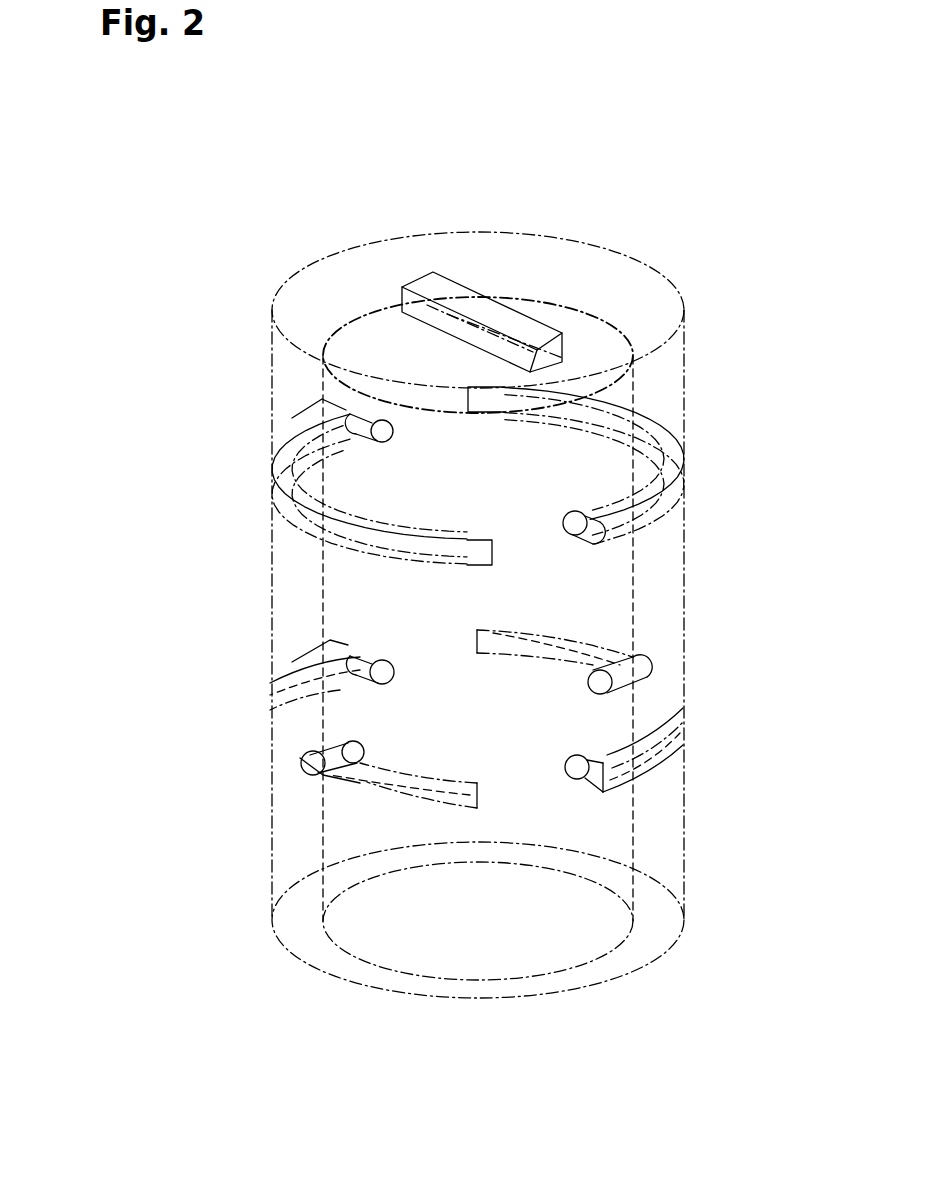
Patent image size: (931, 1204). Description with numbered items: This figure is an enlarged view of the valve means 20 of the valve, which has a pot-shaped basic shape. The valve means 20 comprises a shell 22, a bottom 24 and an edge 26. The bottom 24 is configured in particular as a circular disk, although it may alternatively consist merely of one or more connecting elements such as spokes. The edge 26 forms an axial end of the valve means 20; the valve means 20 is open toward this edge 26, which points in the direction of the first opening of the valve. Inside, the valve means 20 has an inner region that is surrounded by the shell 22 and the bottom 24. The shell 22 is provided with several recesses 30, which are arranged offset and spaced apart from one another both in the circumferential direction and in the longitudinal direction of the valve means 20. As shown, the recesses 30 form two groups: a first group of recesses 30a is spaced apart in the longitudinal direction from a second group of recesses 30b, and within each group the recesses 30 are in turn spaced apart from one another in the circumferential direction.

The valve means 20 is at (598, 249).
The shell 22 is at (457, 937).
The bottom 24 is at (341, 288).
The edge 26 is at (533, 983).
The recess 30 is at (662, 508).
The first group of recesses 30a is at (607, 542).
The second group of recesses 30b is at (620, 768).